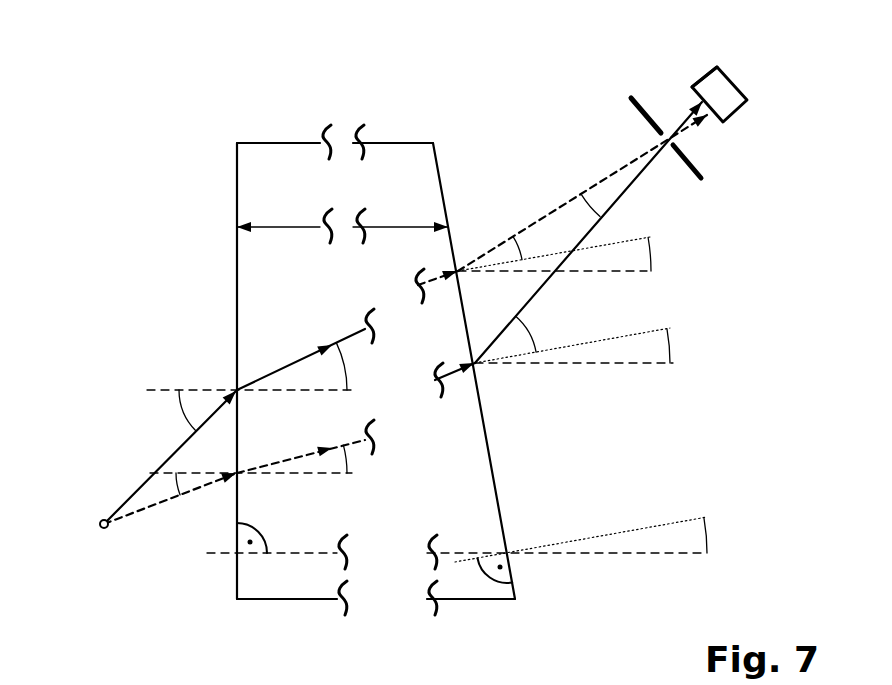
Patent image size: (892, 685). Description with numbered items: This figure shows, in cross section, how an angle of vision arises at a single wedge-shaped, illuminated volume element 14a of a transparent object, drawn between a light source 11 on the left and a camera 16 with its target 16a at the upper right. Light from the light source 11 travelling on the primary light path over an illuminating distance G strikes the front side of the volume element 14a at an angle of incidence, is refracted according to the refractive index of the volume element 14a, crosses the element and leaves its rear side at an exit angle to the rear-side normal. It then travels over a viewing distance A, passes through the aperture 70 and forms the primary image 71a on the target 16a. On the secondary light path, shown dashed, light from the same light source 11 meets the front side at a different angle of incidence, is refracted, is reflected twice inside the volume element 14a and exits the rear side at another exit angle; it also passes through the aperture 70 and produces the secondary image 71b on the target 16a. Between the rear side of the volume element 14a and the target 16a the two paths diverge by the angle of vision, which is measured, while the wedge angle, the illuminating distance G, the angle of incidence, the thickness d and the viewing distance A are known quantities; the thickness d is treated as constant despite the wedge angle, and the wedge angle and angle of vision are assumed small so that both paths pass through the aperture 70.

The volume element 14a is at (205, 120).
The thickness d is at (292, 228).
The illumination distance G is at (181, 446).
The light source 11 is at (101, 529).
The viewing distance A is at (540, 288).
The aperture 70 is at (661, 104).
The primary image 71a is at (697, 98).
The secondary image 71b is at (707, 116).
The camera 16 is at (772, 107).
The target 16a is at (703, 97).